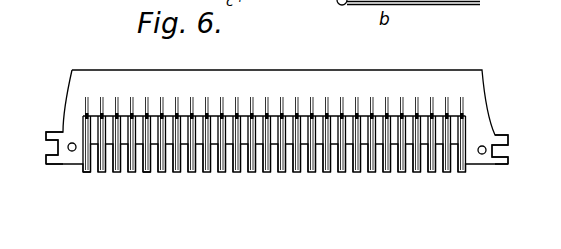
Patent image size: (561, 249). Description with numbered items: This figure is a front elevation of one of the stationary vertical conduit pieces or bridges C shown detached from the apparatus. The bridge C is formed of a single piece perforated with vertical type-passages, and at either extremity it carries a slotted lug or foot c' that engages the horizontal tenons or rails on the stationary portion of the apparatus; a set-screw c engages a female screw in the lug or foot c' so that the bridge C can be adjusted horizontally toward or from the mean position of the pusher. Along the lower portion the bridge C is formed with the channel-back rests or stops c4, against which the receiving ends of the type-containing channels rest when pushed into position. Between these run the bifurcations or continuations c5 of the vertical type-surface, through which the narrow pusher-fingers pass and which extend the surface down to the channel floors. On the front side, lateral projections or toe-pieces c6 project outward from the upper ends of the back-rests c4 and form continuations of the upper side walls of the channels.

The vertical type-conduit C is at (277, 121).
The slotted lug or foot c' is at (61, 143).
The set-screw c is at (493, 146).
The channel-back rest or stop c4 is at (143, 171).
The bifurcation or continuation of the vertical type-surface c5 is at (225, 173).
The lateral projection or toe-piece c6 is at (422, 118).